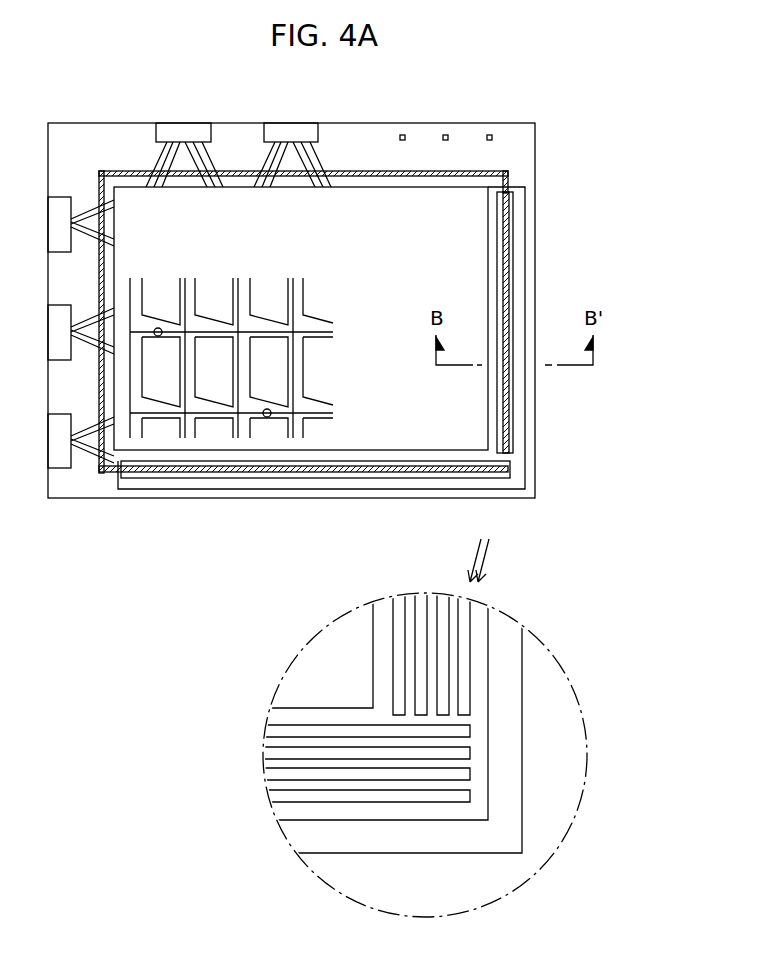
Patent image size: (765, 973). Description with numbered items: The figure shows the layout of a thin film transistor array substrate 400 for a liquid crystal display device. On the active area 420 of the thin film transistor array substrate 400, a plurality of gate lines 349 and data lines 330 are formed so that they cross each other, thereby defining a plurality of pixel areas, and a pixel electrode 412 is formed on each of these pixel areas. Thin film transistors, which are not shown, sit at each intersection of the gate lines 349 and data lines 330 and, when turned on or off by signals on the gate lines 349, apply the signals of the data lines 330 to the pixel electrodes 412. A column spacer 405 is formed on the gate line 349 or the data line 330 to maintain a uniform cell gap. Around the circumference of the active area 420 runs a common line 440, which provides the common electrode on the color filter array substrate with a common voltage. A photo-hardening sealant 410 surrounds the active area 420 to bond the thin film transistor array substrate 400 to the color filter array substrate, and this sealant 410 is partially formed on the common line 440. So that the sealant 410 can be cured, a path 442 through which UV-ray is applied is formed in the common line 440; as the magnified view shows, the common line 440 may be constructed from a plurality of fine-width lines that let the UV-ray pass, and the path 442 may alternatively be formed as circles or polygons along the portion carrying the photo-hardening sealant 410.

The thin film transistor array substrate 400 is at (537, 150).
The photo-hardening sealant 410 is at (113, 170).
The active area 420 is at (470, 392).
The common line 440 is at (496, 227).
The path 442 is at (503, 277).
The gate line 349 is at (310, 332).
The data line 330 is at (295, 367).
The pixel electrode 412 is at (215, 385).
The column spacer 405 is at (267, 417).